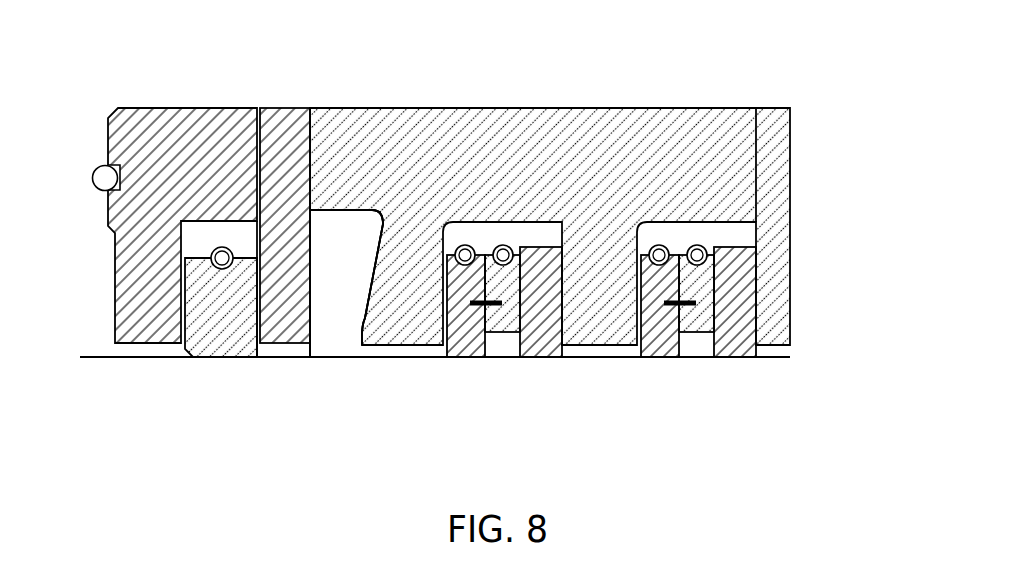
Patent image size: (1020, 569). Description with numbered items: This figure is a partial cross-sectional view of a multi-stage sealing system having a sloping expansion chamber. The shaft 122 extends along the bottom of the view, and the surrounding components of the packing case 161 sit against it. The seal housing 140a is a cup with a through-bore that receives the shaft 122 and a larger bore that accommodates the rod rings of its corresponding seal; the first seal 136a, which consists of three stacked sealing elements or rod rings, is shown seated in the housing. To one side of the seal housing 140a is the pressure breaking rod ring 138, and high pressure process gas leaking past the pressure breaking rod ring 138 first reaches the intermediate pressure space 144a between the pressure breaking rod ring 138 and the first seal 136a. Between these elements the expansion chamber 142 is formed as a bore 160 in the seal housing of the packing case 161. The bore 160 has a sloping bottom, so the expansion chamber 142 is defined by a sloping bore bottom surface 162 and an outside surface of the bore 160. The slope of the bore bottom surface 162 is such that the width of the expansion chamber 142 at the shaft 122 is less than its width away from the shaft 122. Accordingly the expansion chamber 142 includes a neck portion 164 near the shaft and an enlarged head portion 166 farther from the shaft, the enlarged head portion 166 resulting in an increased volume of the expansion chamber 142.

The packing case 161 is at (175, 78).
The expansion chamber 142 is at (327, 230).
The bore 160 is at (340, 245).
The seal housing 140a is at (450, 130).
The pressure breaking rod ring 138 is at (228, 310).
The shaft 122 is at (95, 355).
The head portion 166 is at (347, 260).
The sloping bore bottom surface 162 is at (365, 307).
The neck portion 164 is at (337, 328).
The intermediate pressure space 144a is at (380, 350).
The first seal 136a is at (548, 340).